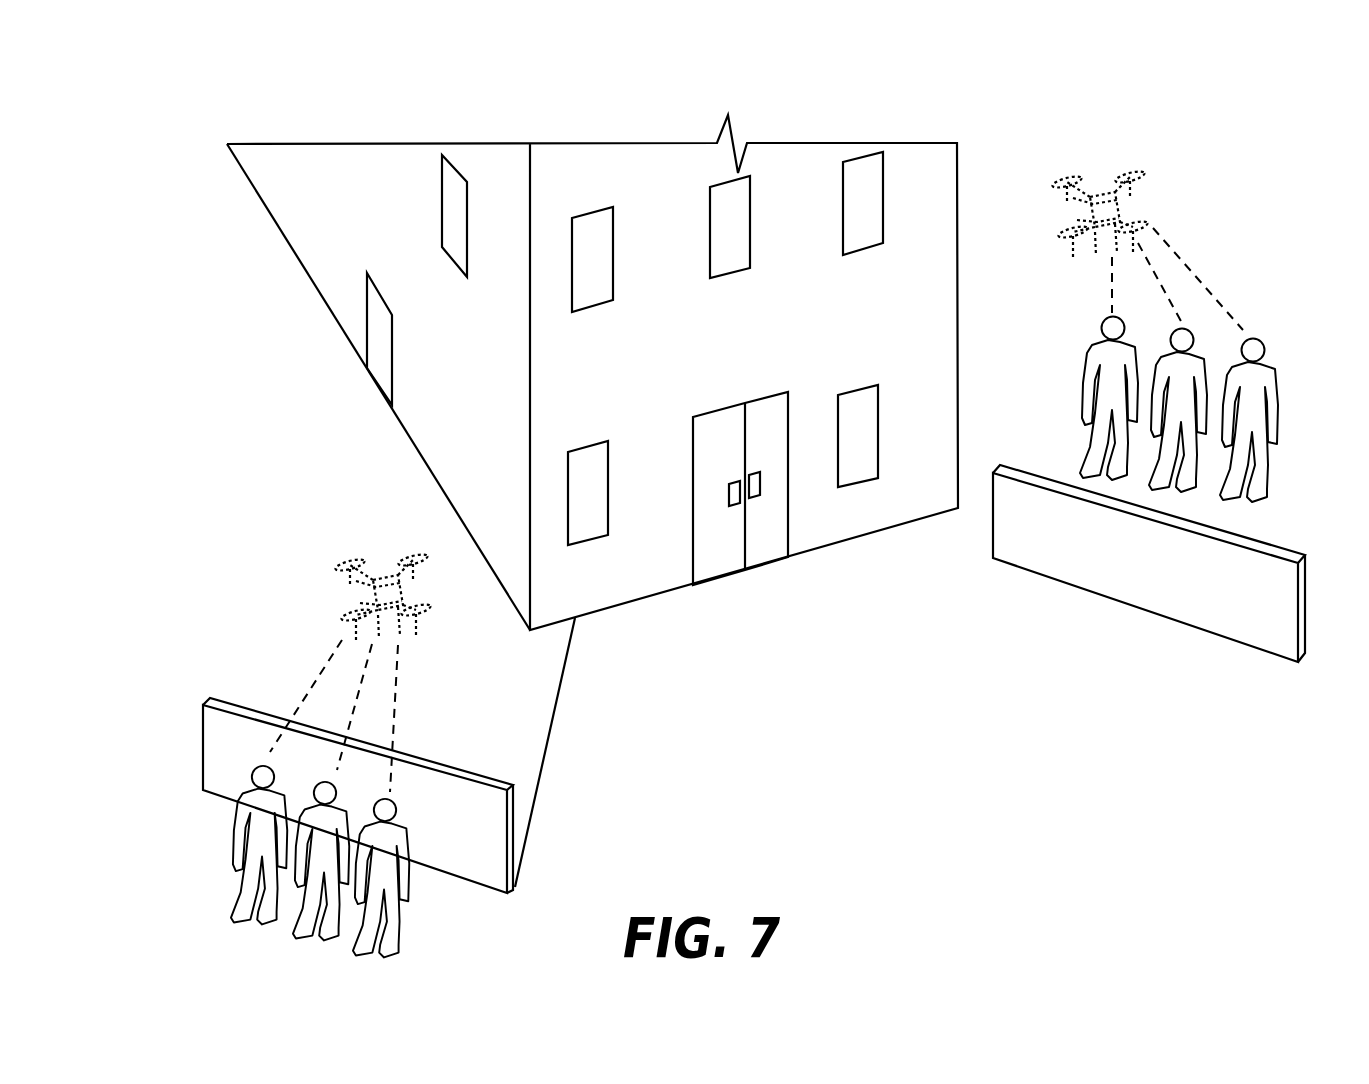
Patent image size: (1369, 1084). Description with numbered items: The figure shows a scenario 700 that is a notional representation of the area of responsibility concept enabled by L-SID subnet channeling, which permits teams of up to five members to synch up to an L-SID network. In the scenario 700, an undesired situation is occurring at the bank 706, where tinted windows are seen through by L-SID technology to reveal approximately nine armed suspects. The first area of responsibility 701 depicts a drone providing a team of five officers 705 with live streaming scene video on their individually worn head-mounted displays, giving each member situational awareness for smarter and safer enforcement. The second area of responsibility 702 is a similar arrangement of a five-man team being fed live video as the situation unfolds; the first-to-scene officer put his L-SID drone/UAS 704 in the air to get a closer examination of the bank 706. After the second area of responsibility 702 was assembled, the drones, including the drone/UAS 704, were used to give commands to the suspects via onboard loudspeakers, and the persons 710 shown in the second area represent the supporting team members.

The scenario 700 is at (278, 160).
The AOR-1 701 is at (270, 448).
The AOR-2 702 is at (1227, 118).
The L-SID drone/UAS 704 is at (1078, 180).
The team of officers 705 is at (213, 750).
The bank 706 is at (755, 573).
The persons in AOR-2 710 is at (1260, 296).